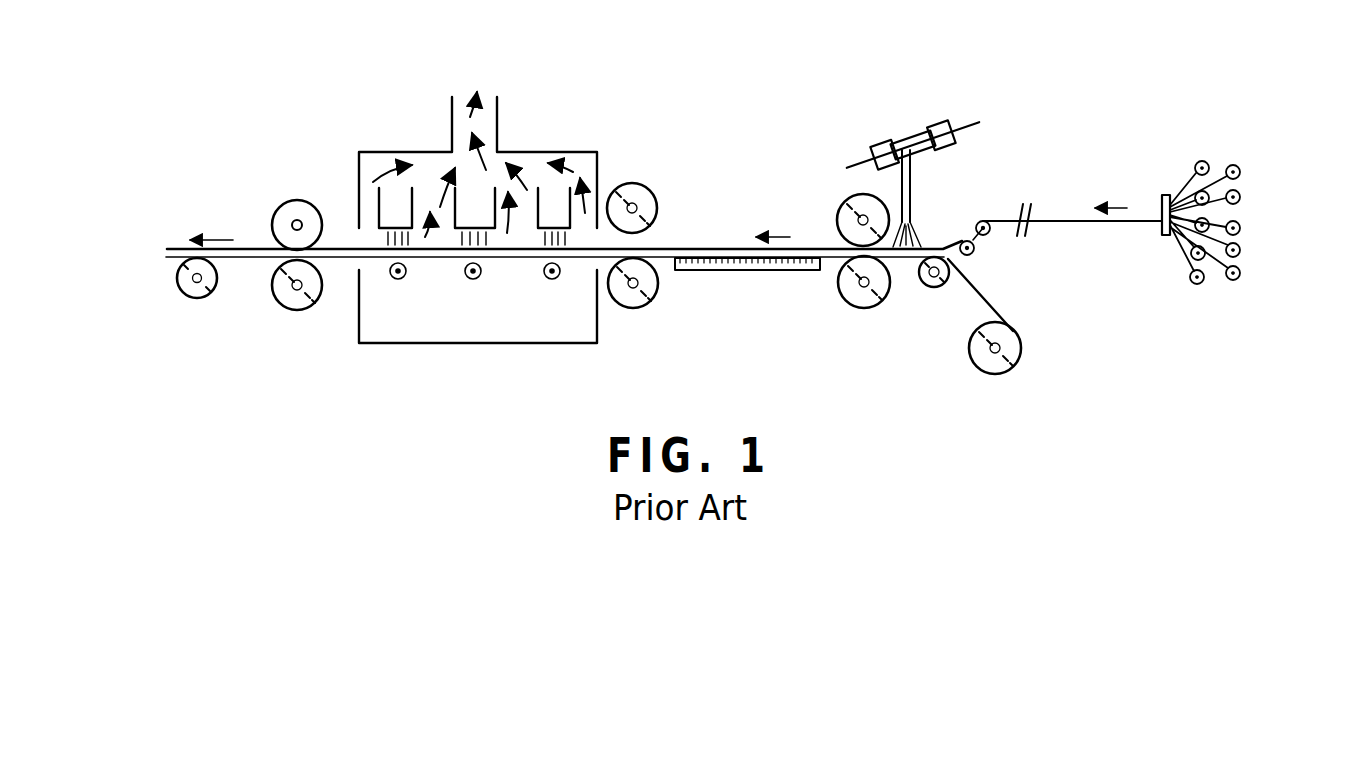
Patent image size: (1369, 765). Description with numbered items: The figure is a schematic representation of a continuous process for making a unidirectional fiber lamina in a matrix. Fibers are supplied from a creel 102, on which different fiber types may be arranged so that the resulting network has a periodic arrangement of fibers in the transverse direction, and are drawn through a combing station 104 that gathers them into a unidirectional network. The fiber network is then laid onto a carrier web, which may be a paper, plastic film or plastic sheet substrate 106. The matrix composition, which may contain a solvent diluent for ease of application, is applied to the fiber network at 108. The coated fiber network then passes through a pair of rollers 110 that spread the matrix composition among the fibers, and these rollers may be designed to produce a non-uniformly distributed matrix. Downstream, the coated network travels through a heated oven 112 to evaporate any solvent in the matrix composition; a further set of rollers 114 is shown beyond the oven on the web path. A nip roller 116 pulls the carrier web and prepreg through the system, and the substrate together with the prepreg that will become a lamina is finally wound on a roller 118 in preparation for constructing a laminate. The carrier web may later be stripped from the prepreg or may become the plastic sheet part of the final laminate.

The creel 102 is at (1250, 152).
The combing station 104 is at (1162, 196).
The substrate 106 is at (980, 297).
The matrix composition application point 108 is at (898, 138).
The pair of rollers 110 is at (840, 206).
The heated oven 112 is at (512, 150).
The nip rollers 114 is at (655, 293).
The nip roller 116 is at (292, 308).
The roller 118 is at (195, 298).